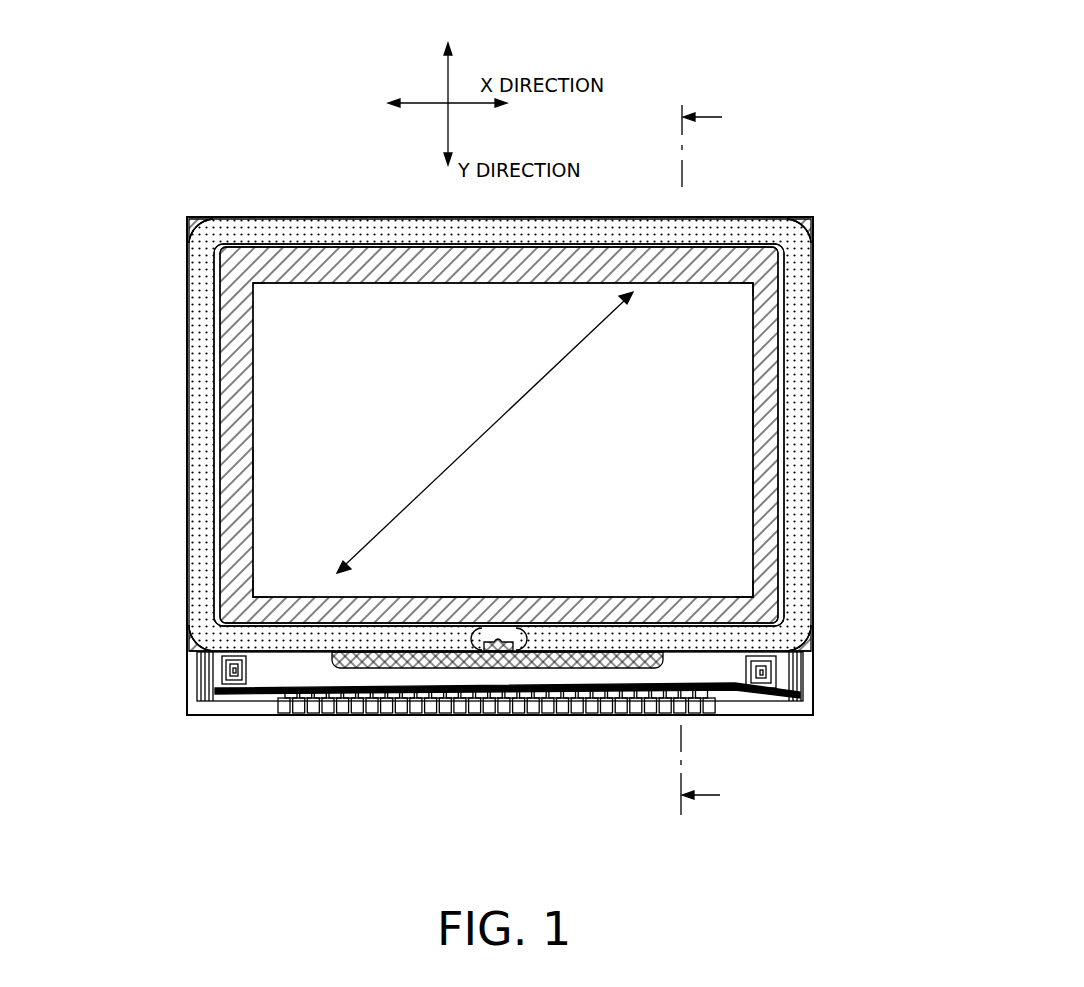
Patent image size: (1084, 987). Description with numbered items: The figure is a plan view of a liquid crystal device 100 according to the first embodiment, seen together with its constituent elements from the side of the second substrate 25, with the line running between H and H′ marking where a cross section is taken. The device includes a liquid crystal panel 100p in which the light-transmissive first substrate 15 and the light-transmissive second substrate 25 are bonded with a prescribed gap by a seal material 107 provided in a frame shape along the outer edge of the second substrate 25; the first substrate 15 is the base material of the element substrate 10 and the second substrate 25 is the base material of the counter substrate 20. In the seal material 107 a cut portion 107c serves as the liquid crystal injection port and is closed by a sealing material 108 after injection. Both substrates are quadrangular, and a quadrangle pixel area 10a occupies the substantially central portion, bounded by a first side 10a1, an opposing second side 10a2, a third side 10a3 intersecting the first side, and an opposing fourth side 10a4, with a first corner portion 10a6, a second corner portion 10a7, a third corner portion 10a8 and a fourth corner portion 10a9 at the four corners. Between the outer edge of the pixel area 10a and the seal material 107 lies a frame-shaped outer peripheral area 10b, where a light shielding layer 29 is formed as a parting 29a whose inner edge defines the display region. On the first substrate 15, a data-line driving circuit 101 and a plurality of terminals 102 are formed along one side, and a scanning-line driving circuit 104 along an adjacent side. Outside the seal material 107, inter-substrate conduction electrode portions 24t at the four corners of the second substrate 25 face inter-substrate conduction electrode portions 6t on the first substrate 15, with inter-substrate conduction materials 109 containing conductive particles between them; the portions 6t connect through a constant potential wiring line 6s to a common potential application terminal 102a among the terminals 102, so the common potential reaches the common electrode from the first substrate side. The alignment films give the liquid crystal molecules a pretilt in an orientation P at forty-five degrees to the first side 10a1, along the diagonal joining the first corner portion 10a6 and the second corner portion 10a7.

The liquid crystal device 100 is at (784, 92).
The liquid crystal panel 100p is at (731, 189).
The inter-substrate conduction material 109 is at (498, 425).
The inter-substrate conduction electrode portion 6t is at (498, 425).
The inter-substrate conduction electrode portion 24t is at (196, 226).
The seal material 107 is at (511, 488).
The scanning-line driving circuit 104 is at (511, 488).
The constant potential wiring line 6s is at (818, 383).
The light shielding layer 29 is at (574, 435).
The parting 29a is at (792, 318).
The pixel area 10a is at (542, 455).
The first side 10a1 is at (389, 286).
The second side 10a2 is at (462, 597).
The third side 10a3 is at (755, 435).
The fourth side 10a4 is at (255, 462).
The first corner portion 10a6 is at (752, 285).
The second corner portion 10a7 is at (255, 595).
The third corner portion 10a8 is at (255, 285).
The fourth corner portion 10a9 is at (752, 592).
The outer peripheral area 10b is at (855, 487).
The sealing material 108 is at (505, 645).
The cut portion 107c is at (488, 650).
The data-line driving circuit 101 is at (722, 672).
The terminal 102 is at (476, 746).
The common potential application terminal 102a is at (284, 712).
The counter substrate 20 is at (475, 713).
The second substrate 25 is at (320, 652).
The element substrate 10 is at (500, 779).
The first substrate 15 is at (232, 718).
The orientation P is at (485, 432).
The cross-section line H is at (711, 770).
The cross-section line H' H′ is at (714, 146).